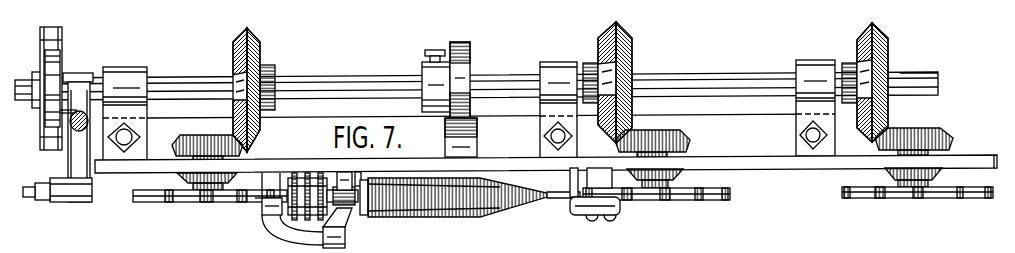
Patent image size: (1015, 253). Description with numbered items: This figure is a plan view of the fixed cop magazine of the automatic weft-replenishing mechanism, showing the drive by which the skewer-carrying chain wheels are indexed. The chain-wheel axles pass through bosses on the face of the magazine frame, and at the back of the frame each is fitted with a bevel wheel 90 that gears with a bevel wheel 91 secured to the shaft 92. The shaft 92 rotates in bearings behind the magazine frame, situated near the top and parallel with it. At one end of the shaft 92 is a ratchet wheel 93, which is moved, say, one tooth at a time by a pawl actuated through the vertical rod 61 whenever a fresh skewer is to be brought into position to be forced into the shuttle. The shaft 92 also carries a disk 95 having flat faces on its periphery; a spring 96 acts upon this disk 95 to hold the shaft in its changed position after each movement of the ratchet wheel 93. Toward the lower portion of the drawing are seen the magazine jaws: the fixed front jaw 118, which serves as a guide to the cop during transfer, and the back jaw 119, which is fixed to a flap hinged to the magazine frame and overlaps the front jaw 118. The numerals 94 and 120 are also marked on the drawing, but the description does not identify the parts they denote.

The vertical rod 61 is at (62, 192).
The bevel wheel 90 is at (182, 140).
The bevel wheel 91 is at (258, 54).
The shaft 92 is at (723, 73).
The ratchet wheel 93 is at (37, 89).
The hub 94 is at (53, 62).
The disk 95 is at (470, 57).
The spring 96 is at (550, 137).
The front jaw 118 is at (350, 222).
The back jaw 119 is at (338, 172).
The motor 120 is at (578, 208).